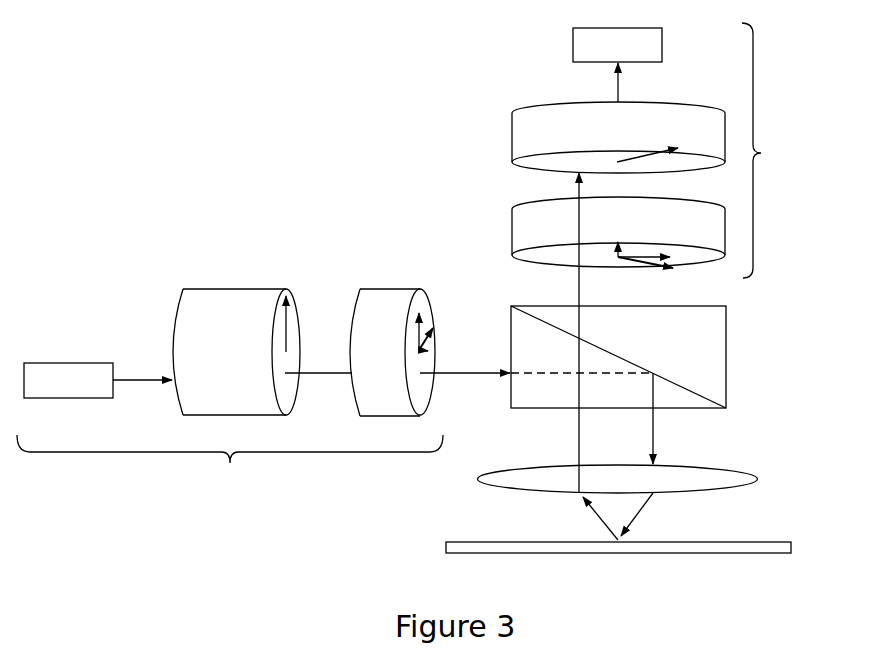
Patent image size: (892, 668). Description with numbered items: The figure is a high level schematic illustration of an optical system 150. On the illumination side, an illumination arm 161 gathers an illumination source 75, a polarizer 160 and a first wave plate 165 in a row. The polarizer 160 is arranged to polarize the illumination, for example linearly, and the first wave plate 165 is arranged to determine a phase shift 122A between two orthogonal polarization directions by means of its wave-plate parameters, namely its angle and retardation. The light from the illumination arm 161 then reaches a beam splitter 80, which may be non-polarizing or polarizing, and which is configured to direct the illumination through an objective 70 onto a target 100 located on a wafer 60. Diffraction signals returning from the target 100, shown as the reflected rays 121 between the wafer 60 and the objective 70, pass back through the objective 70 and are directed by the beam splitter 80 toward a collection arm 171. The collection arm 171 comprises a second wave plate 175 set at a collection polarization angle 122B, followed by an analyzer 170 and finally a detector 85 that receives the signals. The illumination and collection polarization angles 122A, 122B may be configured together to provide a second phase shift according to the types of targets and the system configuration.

The optical system 150 is at (78, 71).
The illumination source 75 is at (63, 363).
The polarizer 160 is at (244, 289).
The first wave plate 165 is at (408, 289).
The illumination arm 161 is at (230, 465).
The phase shift 122A is at (437, 347).
The beam splitter 80 is at (726, 352).
The objective 70 is at (736, 468).
The wafer 60 is at (791, 547).
The reflected light beam 121 is at (603, 536).
The target 100 is at (630, 572).
The second wave plate 175 is at (512, 220).
The collection polarization angle 122B is at (647, 263).
The analyzer 170 is at (512, 130).
The collection arm 171 is at (773, 150).
The detector 85 is at (573, 42).